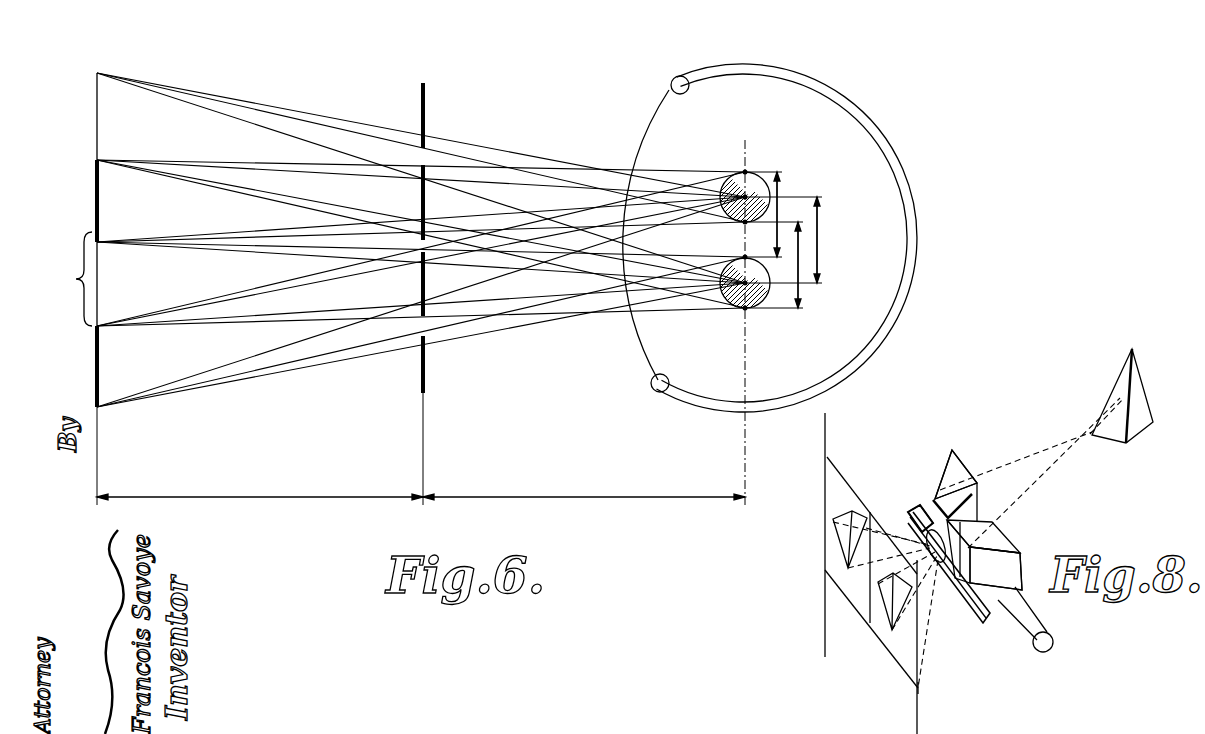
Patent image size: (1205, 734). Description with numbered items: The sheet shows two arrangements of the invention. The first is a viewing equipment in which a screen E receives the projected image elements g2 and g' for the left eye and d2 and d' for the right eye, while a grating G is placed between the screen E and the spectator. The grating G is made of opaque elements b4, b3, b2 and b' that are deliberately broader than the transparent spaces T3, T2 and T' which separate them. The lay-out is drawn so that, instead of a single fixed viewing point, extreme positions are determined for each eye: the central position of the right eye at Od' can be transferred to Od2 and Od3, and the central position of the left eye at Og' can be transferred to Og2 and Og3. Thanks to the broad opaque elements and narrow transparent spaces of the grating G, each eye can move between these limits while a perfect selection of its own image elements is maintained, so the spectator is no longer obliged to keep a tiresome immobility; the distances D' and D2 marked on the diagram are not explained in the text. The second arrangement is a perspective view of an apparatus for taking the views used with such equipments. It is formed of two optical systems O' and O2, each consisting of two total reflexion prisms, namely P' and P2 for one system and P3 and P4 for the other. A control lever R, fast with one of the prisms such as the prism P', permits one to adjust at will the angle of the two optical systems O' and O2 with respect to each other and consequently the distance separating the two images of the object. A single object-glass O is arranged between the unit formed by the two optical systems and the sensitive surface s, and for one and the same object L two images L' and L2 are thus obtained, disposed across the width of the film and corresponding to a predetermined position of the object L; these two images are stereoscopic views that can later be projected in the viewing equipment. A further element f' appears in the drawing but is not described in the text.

In FIG. 6, the image element d2 is at (97, 116).
In FIG. 6, the image element g2 is at (97, 200).
In FIG. 6, the image element d' is at (116, 284).
In FIG. 6, the image element g' is at (79, 366).
In FIG. 6, the screen E is at (70, 279).
In FIG. 6, the opaque element b4 is at (426, 104).
In FIG. 6, the opaque element b3 is at (426, 214).
In FIG. 6, the opaque element b2 is at (426, 284).
In FIG. 6, the opaque element b' is at (442, 364).
In FIG. 6, the grating G is at (424, 393).
In FIG. 6, the transparent space T3 is at (423, 157).
In FIG. 6, the transparent space T2 is at (417, 238).
In FIG. 6, the transparent space T' is at (404, 360).
In FIG. 6, the right eye position Od3 is at (766, 201).
In FIG. 6, the right eye position Od2 is at (793, 253).
In FIG. 6, the central position of the right eye Od' is at (815, 228).
In FIG. 6, the left eye position Og3 is at (781, 224).
In FIG. 6, the left eye position Og2 is at (793, 276).
In FIG. 6, the central position of the left eye Og' is at (831, 244).
In FIG. 6, the distance object to lens D' is at (260, 488).
In FIG. 6, the distance lens to eye D2 is at (584, 488).
In FIG. 8, the object L is at (1121, 395).
In FIG. 8, the image of the object L' is at (827, 539).
In FIG. 8, the image of the object L2 is at (884, 630).
In FIG. 8, the optical system O2 is at (950, 465).
In FIG. 8, the total reflexion prism P2 is at (962, 462).
In FIG. 8, the total reflexion prism P4 is at (980, 497).
In FIG. 8, the total reflexion prism P3 is at (983, 518).
In FIG. 8, the total reflexion prism P' is at (1021, 549).
In FIG. 8, the optical system O' is at (1014, 565).
In FIG. 8, the object-glass O is at (932, 562).
In FIG. 8, the lens f' is at (923, 518).
In FIG. 8, the control lever R is at (1054, 637).
In FIG. 8, the sensitive surface s is at (920, 688).